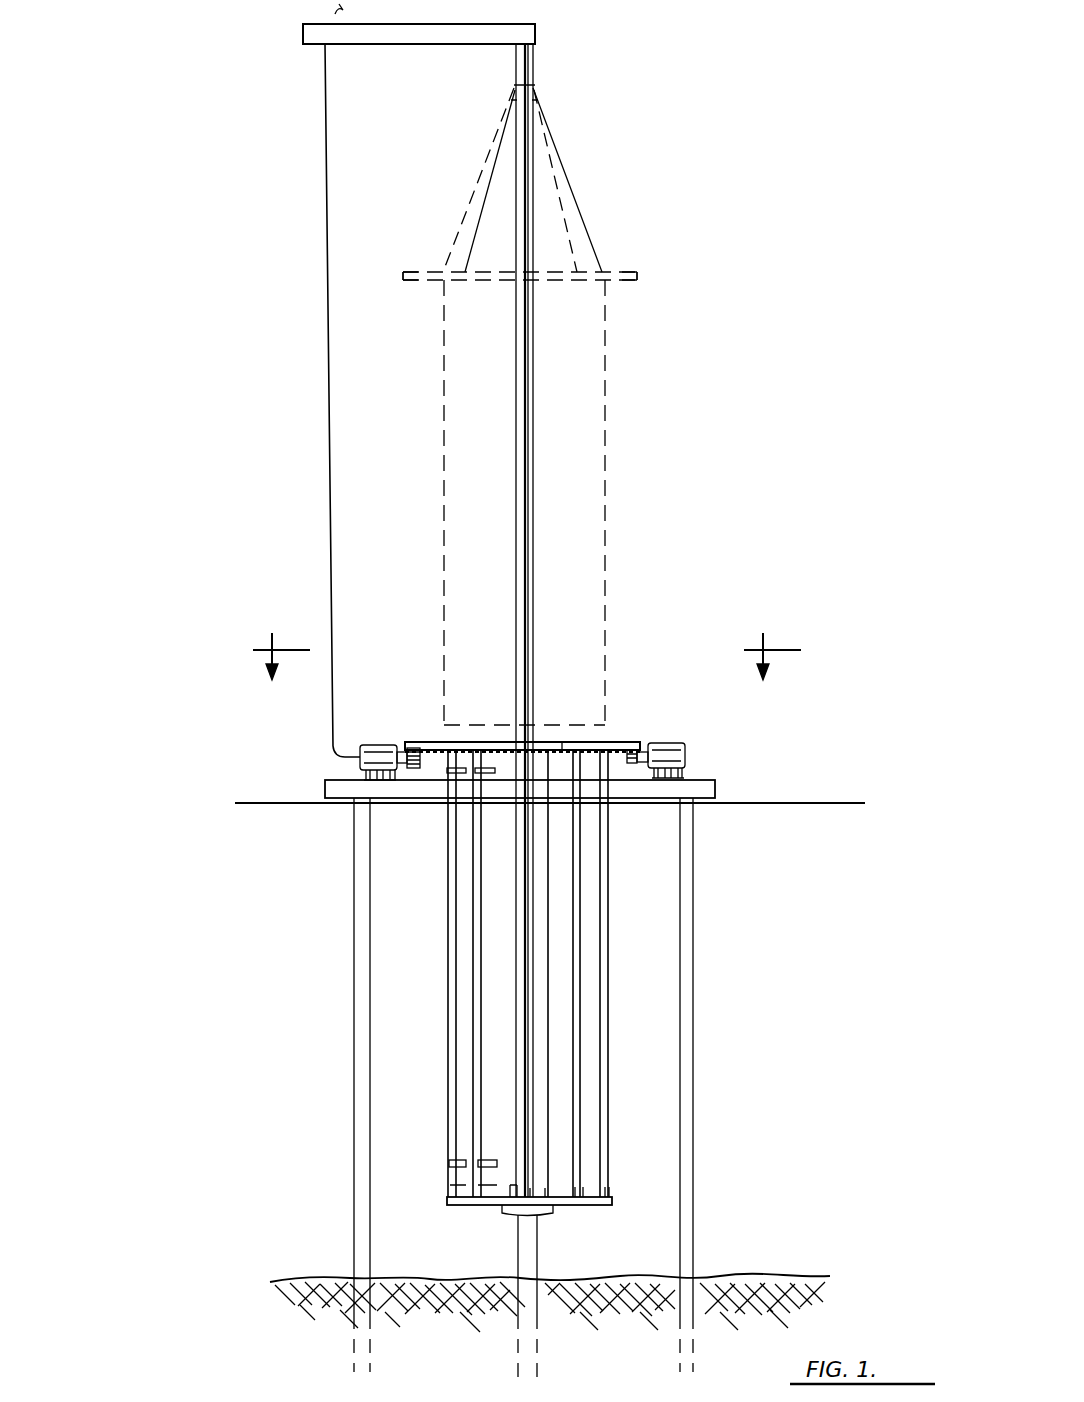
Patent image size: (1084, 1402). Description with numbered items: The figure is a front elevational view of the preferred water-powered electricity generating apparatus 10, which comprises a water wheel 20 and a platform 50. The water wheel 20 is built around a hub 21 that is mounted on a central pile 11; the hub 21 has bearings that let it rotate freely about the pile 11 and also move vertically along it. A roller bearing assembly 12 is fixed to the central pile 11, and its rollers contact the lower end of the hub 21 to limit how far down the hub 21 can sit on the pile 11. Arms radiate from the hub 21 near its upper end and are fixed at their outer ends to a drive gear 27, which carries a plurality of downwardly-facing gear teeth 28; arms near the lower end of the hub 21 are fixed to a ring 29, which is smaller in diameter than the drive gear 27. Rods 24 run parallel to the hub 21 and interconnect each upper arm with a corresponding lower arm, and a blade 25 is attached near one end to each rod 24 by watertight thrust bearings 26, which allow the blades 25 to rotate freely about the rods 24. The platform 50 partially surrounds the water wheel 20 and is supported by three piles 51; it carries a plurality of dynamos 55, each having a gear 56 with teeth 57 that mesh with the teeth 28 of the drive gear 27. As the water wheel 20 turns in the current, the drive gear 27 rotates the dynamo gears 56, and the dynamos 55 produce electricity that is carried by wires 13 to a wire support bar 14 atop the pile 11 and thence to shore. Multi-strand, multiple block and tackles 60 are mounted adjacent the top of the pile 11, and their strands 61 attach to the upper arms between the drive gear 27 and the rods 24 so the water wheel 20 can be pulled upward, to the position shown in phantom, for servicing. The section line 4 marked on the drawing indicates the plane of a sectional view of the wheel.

The section line 4- 4 is at (527, 675).
The water-powered electricity generating apparatus 10 is at (685, 410).
The central pile 11 is at (537, 1250).
The roller bearing assembly 12 is at (505, 1213).
The wires 13 is at (325, 200).
The wire support bar 14 is at (422, 32).
The water wheel 20 is at (604, 508).
The hub 21 is at (540, 906).
The rods 24 is at (450, 860).
The blade 25 is at (495, 982).
The watertight thrust bearings 26 is at (455, 1161).
The drive gear 27 is at (640, 276).
The gear teeth 28 is at (565, 742).
The ring 29 is at (453, 1205).
The platform 50 is at (715, 788).
The piles 51 is at (354, 1030).
The dynamo 55 is at (358, 768).
The gear 56 is at (412, 748).
The teeth 57 is at (420, 768).
The multi-strand, multiple block and tackles 60 is at (534, 89).
The strands 61 is at (578, 212).